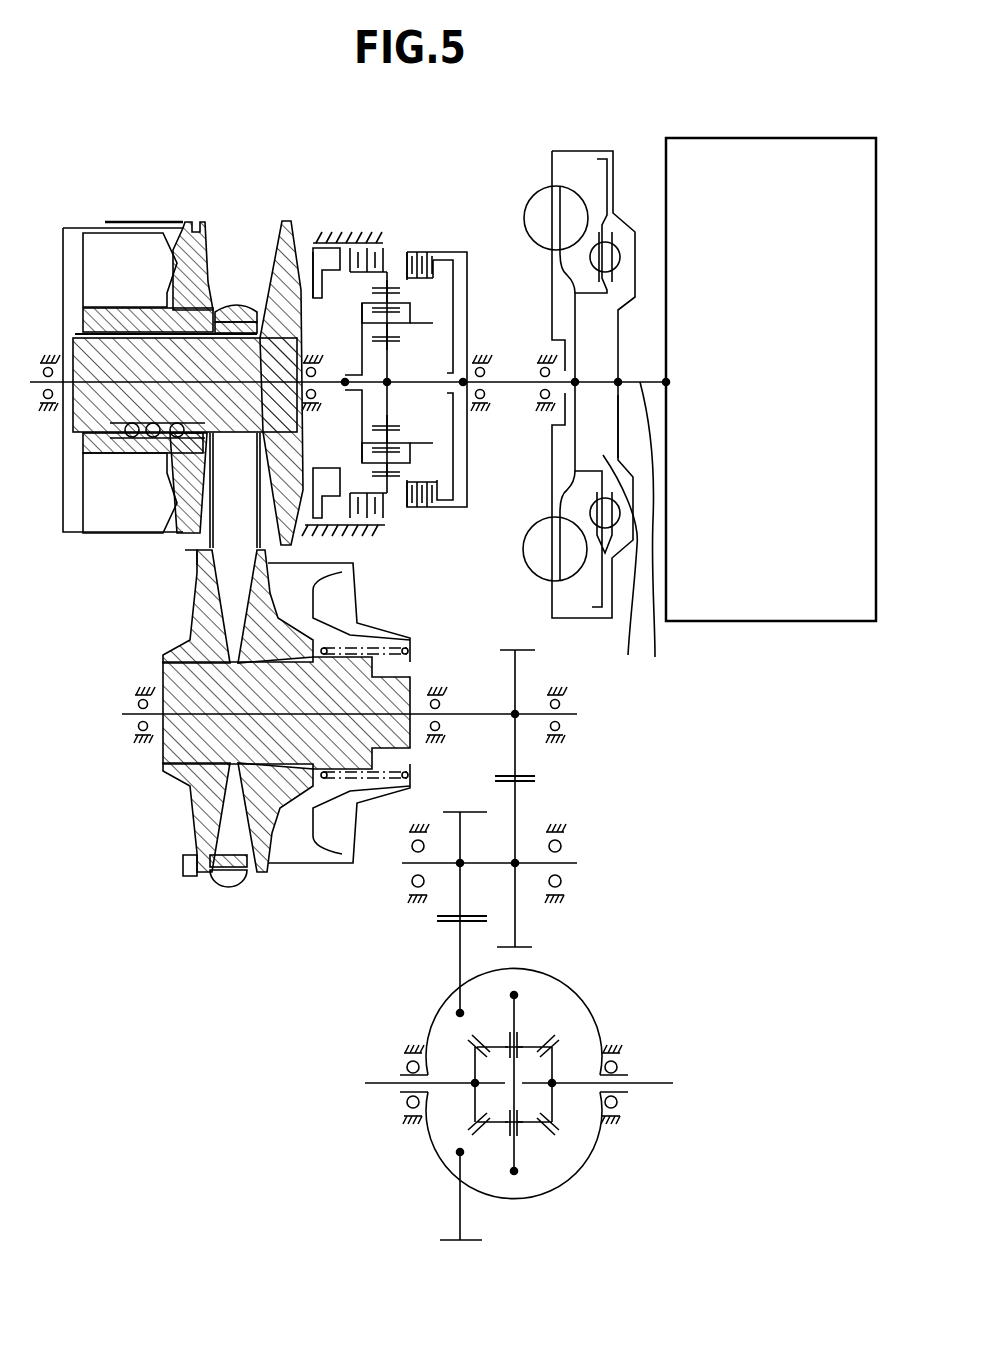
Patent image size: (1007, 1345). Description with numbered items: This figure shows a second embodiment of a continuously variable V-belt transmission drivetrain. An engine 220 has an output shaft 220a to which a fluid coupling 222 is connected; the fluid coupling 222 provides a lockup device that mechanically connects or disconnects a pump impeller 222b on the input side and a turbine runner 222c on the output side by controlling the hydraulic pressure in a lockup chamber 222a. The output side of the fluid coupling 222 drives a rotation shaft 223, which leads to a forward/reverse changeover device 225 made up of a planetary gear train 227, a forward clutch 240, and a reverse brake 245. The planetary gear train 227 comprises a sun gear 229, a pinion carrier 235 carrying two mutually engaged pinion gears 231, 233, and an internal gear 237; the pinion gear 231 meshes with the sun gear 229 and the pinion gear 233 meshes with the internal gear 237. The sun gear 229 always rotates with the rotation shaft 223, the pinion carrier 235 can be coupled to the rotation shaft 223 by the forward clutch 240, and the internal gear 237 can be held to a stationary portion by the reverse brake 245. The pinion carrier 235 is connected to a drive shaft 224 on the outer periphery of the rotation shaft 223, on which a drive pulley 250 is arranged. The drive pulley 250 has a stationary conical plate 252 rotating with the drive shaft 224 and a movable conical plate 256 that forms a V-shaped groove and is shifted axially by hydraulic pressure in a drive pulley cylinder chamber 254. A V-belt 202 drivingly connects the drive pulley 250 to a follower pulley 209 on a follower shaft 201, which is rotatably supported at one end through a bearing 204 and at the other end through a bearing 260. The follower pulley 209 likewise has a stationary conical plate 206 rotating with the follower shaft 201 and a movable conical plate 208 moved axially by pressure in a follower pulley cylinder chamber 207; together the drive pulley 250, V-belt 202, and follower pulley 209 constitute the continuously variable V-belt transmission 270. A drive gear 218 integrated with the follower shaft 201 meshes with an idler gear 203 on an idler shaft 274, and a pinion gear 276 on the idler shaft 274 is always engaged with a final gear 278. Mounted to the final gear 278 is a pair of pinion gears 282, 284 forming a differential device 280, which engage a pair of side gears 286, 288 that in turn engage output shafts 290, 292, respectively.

The follower shaft 201 is at (478, 722).
The V-belt 202 is at (190, 552).
The idler gear 203 is at (528, 943).
The bearing 204 is at (452, 707).
The stationary conical plate 206 is at (203, 808).
The follower pulley cylinder chamber 207 is at (297, 850).
The movable conical plate 208 is at (267, 858).
The follower pulley 209 is at (222, 888).
The drive gear 218 is at (505, 647).
The engine 220 is at (739, 384).
The output shaft 220a is at (652, 536).
The fluid coupling 222 is at (549, 364).
The lockup chamber 222a is at (610, 523).
The pump impeller 222b is at (541, 540).
The turbine runner 222c is at (566, 538).
The rotation shaft 223 is at (544, 392).
The drive shaft 224 is at (323, 380).
The forward/reverse changeover device 225 is at (360, 206).
The planetary gear train 227 is at (420, 322).
The sun gear 229 is at (388, 410).
The pinion gear 231 is at (397, 433).
The pinion gear 233 is at (400, 467).
The pinion carrier 235 is at (360, 423).
The internal gear 237 is at (390, 488).
The forward clutch 240 is at (434, 244).
The reverse brake 245 is at (388, 252).
The drive pulley 250 is at (203, 335).
The stationary conical plate 252 is at (277, 155).
The drive pulley cylinder chamber 254 is at (102, 245).
The movable conical plate 256 is at (195, 230).
The bearing 260 is at (130, 725).
The continuously variable V-belt transmission 270 is at (315, 753).
The idler shaft 274 is at (532, 863).
The pinion gear 276 is at (458, 893).
The final gear 278 is at (473, 1242).
The differential device 280 is at (512, 1078).
The pinion gear 282 is at (532, 1125).
The pinion gear 284 is at (492, 1042).
The side gear 286 is at (473, 1110).
The side gear 288 is at (552, 1060).
The output shaft 290 is at (369, 1083).
The output shaft 292 is at (654, 1083).